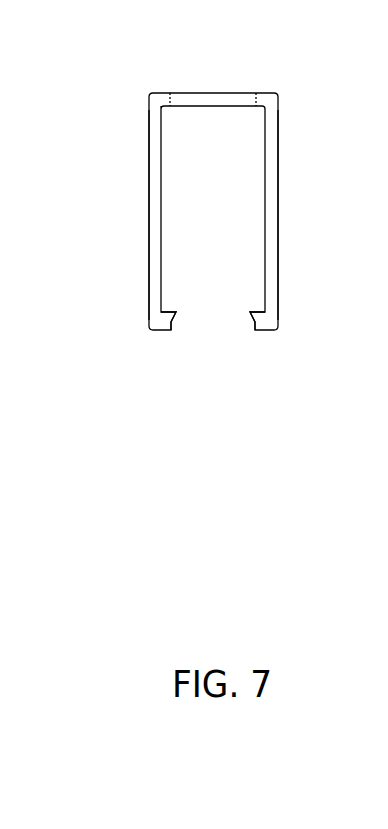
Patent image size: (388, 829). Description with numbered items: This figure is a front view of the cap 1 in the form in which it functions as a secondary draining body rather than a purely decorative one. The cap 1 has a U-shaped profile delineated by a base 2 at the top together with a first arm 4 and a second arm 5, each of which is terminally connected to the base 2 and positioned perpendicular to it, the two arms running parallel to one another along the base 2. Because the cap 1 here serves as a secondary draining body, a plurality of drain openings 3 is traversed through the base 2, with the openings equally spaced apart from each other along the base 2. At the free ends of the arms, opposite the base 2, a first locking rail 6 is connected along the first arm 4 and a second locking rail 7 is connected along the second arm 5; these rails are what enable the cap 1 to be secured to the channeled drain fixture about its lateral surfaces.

The cap 1 is at (305, 260).
The base 2 is at (160, 98).
The plurality of drain openings 3 is at (257, 100).
The first arm 4 is at (152, 202).
The second arm 5 is at (273, 188).
The first locking rail 6 is at (172, 318).
The second locking rail 7 is at (254, 318).